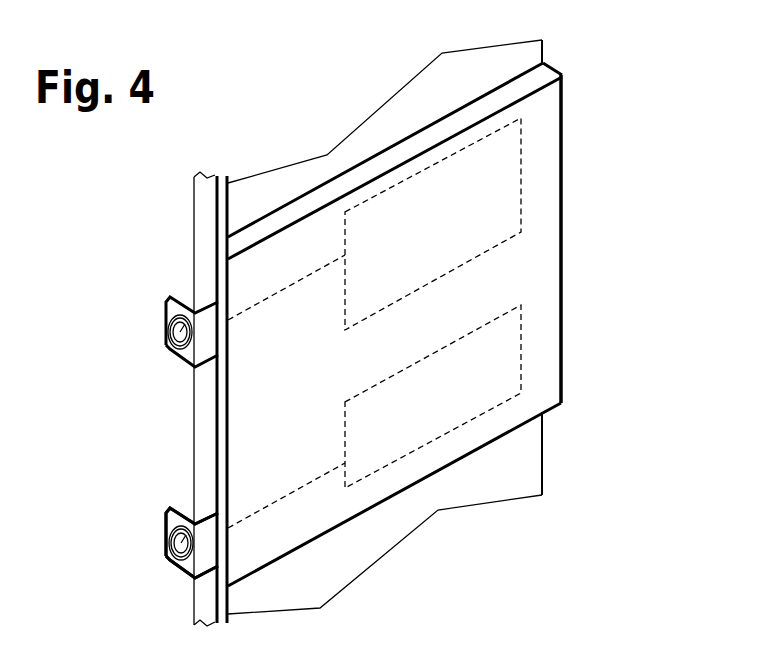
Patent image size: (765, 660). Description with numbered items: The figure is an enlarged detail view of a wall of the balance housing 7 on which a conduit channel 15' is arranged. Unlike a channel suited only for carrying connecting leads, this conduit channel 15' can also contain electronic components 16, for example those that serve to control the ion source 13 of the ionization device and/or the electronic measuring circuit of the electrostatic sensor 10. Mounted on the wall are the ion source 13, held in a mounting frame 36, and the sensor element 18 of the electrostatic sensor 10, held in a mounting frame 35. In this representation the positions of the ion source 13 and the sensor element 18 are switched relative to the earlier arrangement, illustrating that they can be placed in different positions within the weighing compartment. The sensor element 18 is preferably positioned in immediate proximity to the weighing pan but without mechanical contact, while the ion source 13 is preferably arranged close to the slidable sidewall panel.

The balance housing 7 is at (493, 68).
The conduit channel 15' is at (607, 239).
The electronic components 16 is at (475, 203).
The mounting frame 36 is at (168, 327).
The ion source 13 is at (180, 332).
The electrostatic sensor 10 is at (166, 516).
The mounting frame 35 is at (169, 541).
The sensor element 18 is at (181, 543).